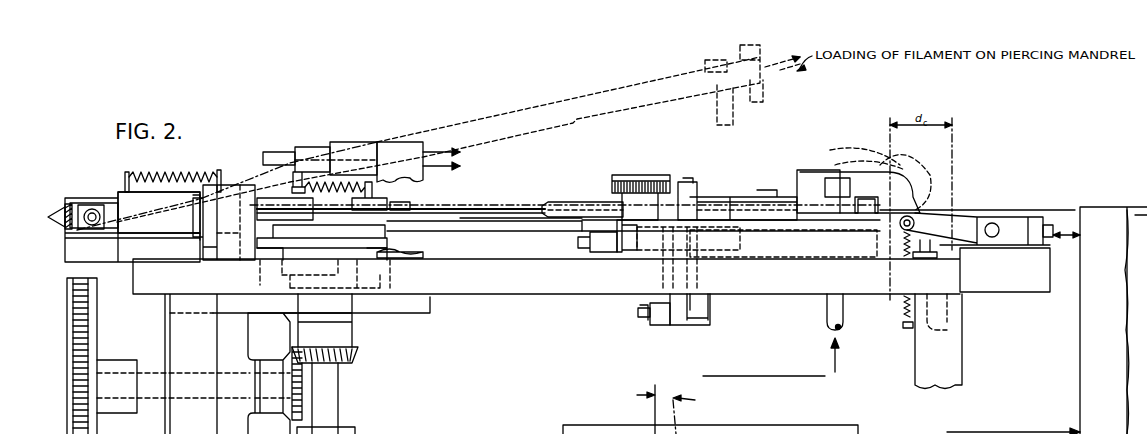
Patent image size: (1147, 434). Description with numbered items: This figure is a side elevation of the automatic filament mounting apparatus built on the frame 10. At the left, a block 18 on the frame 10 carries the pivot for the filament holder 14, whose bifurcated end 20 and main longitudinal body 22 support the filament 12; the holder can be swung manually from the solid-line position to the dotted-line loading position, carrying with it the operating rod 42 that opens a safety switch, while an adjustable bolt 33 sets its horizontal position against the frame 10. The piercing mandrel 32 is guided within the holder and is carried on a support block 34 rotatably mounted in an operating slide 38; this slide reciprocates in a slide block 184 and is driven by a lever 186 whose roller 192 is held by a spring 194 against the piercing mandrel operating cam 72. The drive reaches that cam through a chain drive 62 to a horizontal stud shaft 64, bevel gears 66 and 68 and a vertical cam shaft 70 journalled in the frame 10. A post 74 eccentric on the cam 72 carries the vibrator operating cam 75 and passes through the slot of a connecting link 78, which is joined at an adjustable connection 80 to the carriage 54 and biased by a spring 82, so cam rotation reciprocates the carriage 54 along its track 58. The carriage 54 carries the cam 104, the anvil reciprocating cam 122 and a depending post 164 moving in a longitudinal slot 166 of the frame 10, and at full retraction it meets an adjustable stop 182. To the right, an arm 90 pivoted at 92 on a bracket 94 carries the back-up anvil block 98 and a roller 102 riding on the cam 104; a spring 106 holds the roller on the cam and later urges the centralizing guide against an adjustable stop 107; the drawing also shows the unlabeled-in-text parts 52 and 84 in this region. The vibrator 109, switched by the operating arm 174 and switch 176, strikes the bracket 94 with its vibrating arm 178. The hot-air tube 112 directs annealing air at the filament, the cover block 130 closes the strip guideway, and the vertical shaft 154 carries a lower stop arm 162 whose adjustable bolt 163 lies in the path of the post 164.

The frame 10 is at (503, 296).
The filament 12 is at (876, 197).
The filament holder 14 is at (480, 208).
The block 18 is at (65, 258).
The bifurcated end 20 is at (70, 203).
The main longitudinal body 22 is at (510, 221).
The piercing mandrel 32 is at (46, 214).
The adjustable bolt 33 is at (717, 118).
The support block 34 is at (65, 228).
The operating slide 38 is at (95, 205).
The operating rod 42 is at (755, 104).
The frame 52 is at (1080, 207).
The carriage 54 is at (627, 250).
The track 58 is at (775, 250).
The chain drive 62 is at (66, 406).
The stud shaft 64 is at (150, 398).
The bevel gear 66 is at (270, 360).
The bevel gear 68 is at (352, 363).
The cam shaft 70 is at (338, 409).
The piercing mandrel operating cam 72 is at (258, 238).
The post 74 is at (292, 175).
The vibrator operating cam 75 is at (282, 152).
The connecting link 78 is at (398, 202).
The adjustable connection 80 is at (636, 175).
The spring 82 is at (368, 182).
The jaw block 84 is at (808, 178).
The arm 90 is at (895, 172).
The pivot 92 is at (995, 223).
The bracket 94 is at (1018, 217).
The back-up anvil block 98 is at (833, 178).
The roller 102 is at (913, 223).
The cam 104 is at (895, 258).
The spring 106 is at (900, 322).
The adjustable stop 107 is at (937, 258).
The vibrator 109 is at (997, 364).
The tube 112 is at (827, 314).
The anvil reciprocating cam 122 is at (716, 200).
The cover block 130 is at (583, 425).
The vertical shaft 154 is at (695, 322).
The lower stop arm 162 is at (700, 316).
The adjustable bolt 163 is at (636, 316).
The post 164 is at (666, 325).
The longitudinal slot 166 is at (708, 258).
The operating arm 174 is at (316, 147).
The switch 176 is at (352, 142).
The vibrating arm 178 is at (1060, 240).
The adjustable stop 182 is at (604, 252).
The slide block 184 is at (125, 192).
The lever 186 is at (228, 185).
The roller 192 is at (395, 238).
The spring 194 is at (165, 178).